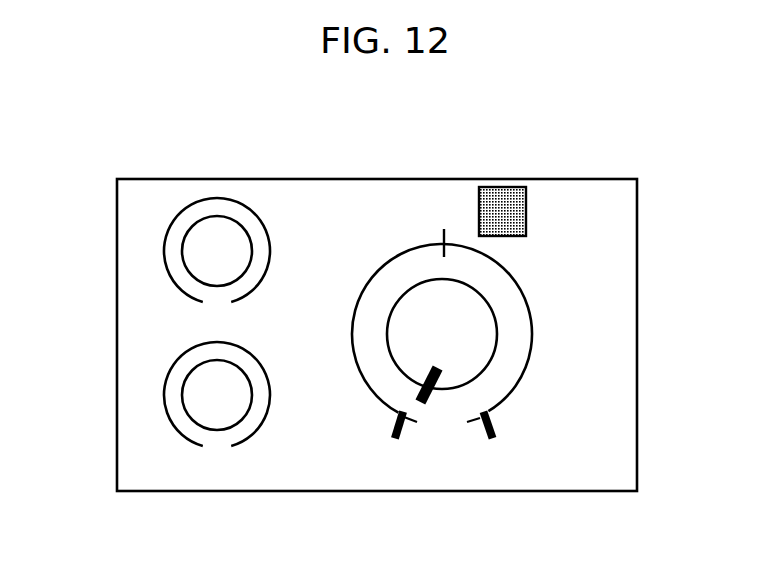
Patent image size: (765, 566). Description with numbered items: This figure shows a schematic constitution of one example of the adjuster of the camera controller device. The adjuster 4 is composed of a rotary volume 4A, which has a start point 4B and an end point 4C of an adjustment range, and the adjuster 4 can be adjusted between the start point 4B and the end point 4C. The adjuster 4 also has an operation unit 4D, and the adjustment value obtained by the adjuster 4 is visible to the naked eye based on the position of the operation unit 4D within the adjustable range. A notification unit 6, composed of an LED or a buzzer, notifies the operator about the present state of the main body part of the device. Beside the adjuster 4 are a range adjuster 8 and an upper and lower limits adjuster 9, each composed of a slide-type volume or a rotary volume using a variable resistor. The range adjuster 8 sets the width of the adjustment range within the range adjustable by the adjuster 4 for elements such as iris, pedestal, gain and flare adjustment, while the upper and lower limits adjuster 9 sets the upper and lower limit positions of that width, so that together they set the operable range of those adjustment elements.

The adjuster 4 is at (340, 179).
The rotary volume 4A is at (552, 298).
The start point 4B is at (395, 437).
The end point 4C is at (493, 425).
The operation unit 4D is at (488, 333).
The notification unit 6 is at (488, 207).
The range adjuster 8 is at (212, 230).
The upper and lower limits adjuster 9 is at (195, 400).